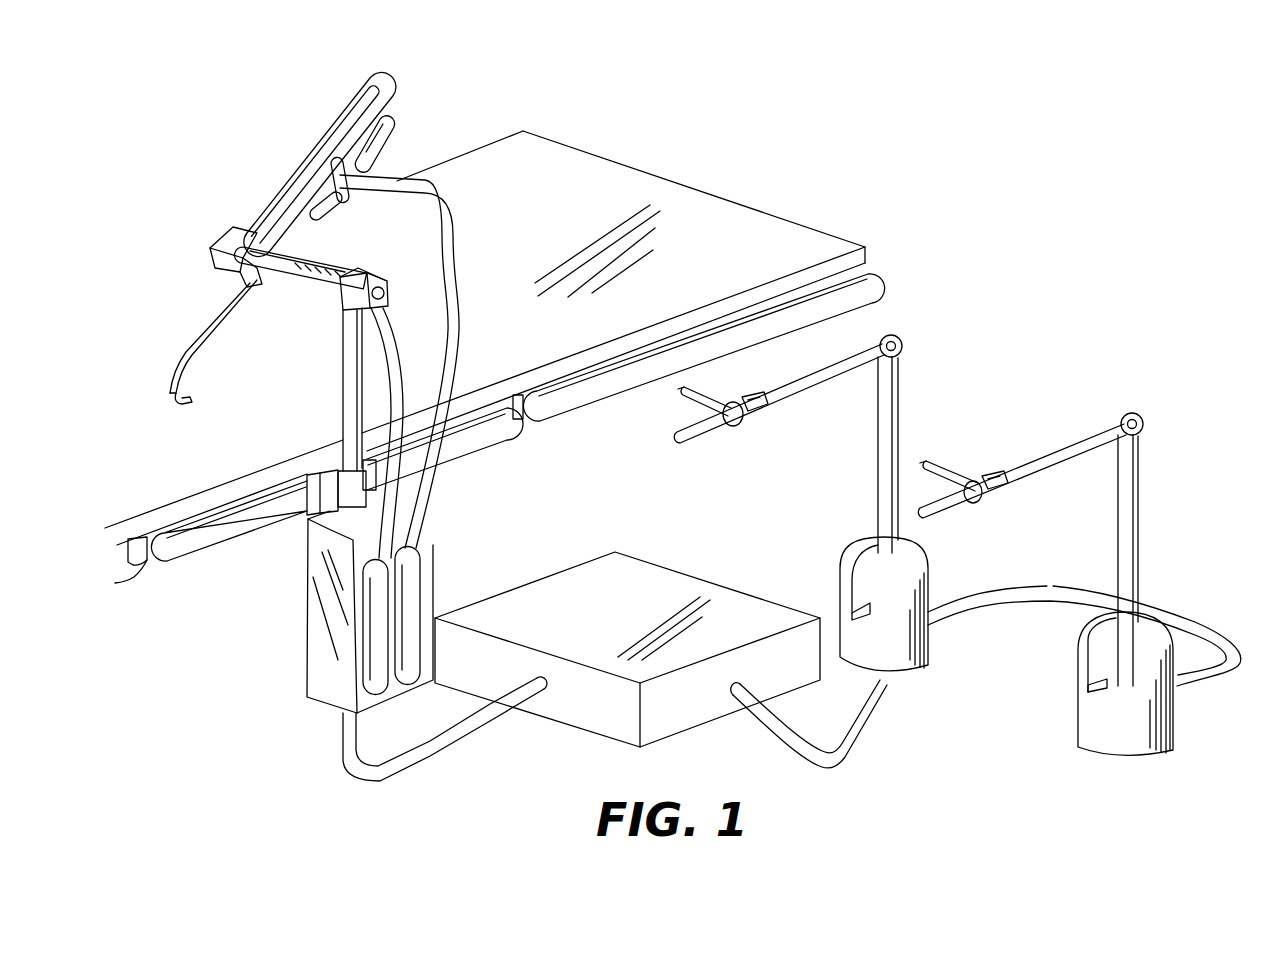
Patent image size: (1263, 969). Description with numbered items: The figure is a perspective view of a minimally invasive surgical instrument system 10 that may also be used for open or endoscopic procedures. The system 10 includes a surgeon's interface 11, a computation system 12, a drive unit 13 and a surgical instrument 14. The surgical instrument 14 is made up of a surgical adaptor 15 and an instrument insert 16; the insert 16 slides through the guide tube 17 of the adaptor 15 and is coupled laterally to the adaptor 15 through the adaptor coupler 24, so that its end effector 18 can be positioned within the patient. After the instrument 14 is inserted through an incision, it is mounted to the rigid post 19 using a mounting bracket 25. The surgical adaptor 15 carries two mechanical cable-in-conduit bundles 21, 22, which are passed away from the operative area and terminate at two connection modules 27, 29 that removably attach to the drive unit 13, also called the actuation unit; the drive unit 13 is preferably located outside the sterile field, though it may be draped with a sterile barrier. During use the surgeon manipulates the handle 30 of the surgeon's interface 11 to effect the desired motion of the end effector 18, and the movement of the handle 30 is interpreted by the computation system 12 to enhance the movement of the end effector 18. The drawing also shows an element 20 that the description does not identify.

The surgical instrument system 10 is at (788, 122).
The surgeon's interface 11 is at (993, 712).
The computation system 12 is at (640, 624).
The drive unit 13 is at (332, 628).
The surgical instrument 14 is at (221, 164).
The surgical adaptor 15 is at (317, 170).
The instrument insert 16 is at (380, 157).
The guide tube 17 is at (210, 323).
The end effector 18 is at (173, 403).
The rigid post 19 is at (320, 280).
The table 20 is at (540, 215).
The cable-in-conduit bundle 21 is at (393, 347).
The cable-in-conduit bundle 22 is at (437, 207).
The adaptor coupler 24 is at (380, 128).
The mounting bracket 25 is at (233, 233).
The connection module 27 is at (377, 627).
The connection module 29 is at (410, 630).
The handle 30 is at (737, 420).